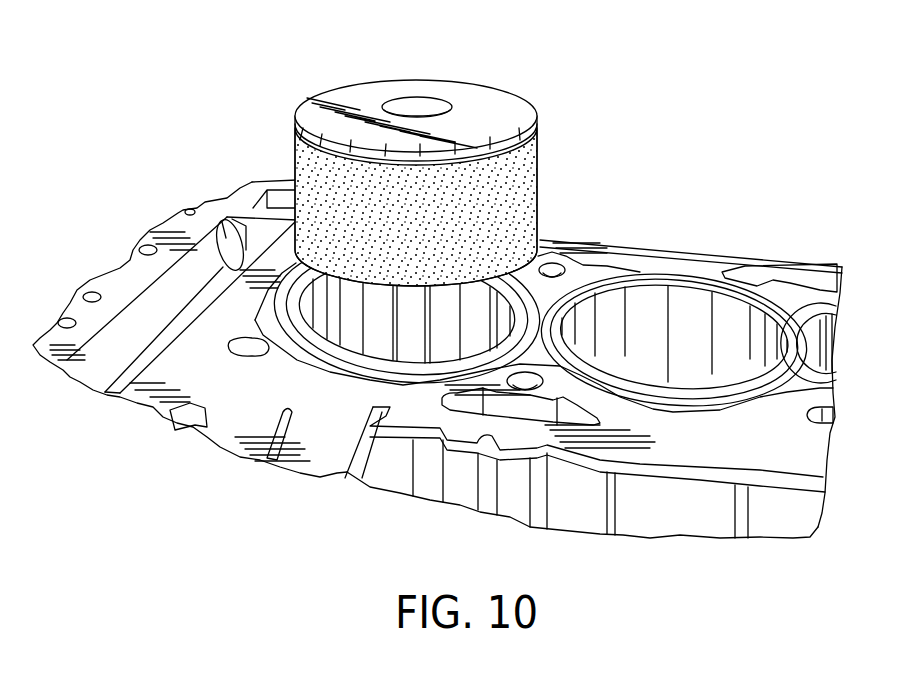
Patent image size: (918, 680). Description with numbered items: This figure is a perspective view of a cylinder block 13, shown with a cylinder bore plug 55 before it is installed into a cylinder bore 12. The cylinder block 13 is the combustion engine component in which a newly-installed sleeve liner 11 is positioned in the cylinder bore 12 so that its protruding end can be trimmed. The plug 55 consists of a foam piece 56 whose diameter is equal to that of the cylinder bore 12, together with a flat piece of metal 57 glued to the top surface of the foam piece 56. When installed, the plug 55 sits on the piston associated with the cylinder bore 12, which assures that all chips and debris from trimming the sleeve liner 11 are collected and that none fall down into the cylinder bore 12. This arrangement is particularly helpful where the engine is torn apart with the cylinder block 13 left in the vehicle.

The sleeve liner 11 is at (695, 292).
The cylinder bore 12 is at (637, 337).
The cylinder block 13 is at (783, 262).
The cylinder bore plug 55 is at (525, 92).
The foam piece 56 is at (520, 195).
The flat piece of metal 57 is at (495, 100).